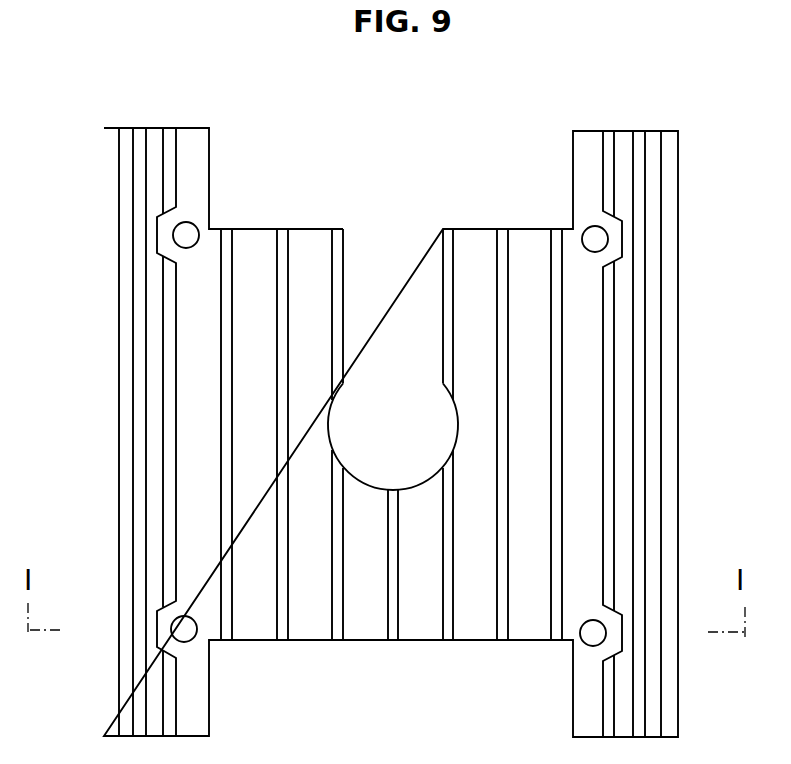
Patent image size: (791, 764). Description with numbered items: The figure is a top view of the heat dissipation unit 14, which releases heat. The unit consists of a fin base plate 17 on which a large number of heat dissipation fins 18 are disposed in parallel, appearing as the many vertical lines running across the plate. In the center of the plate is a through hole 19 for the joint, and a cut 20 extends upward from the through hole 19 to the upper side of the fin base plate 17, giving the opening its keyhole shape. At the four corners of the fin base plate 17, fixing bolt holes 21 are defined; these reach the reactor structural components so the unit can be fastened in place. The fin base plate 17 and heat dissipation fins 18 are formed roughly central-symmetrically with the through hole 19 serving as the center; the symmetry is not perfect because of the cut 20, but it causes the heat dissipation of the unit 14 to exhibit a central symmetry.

The heat dissipation unit 14 is at (651, 104).
The fin base plate 17 is at (585, 170).
The heat dissipation fins 18 is at (505, 533).
The through hole for the joint 19 is at (377, 436).
The cut 20 is at (401, 280).
The fixing bolt holes 21 is at (185, 235).